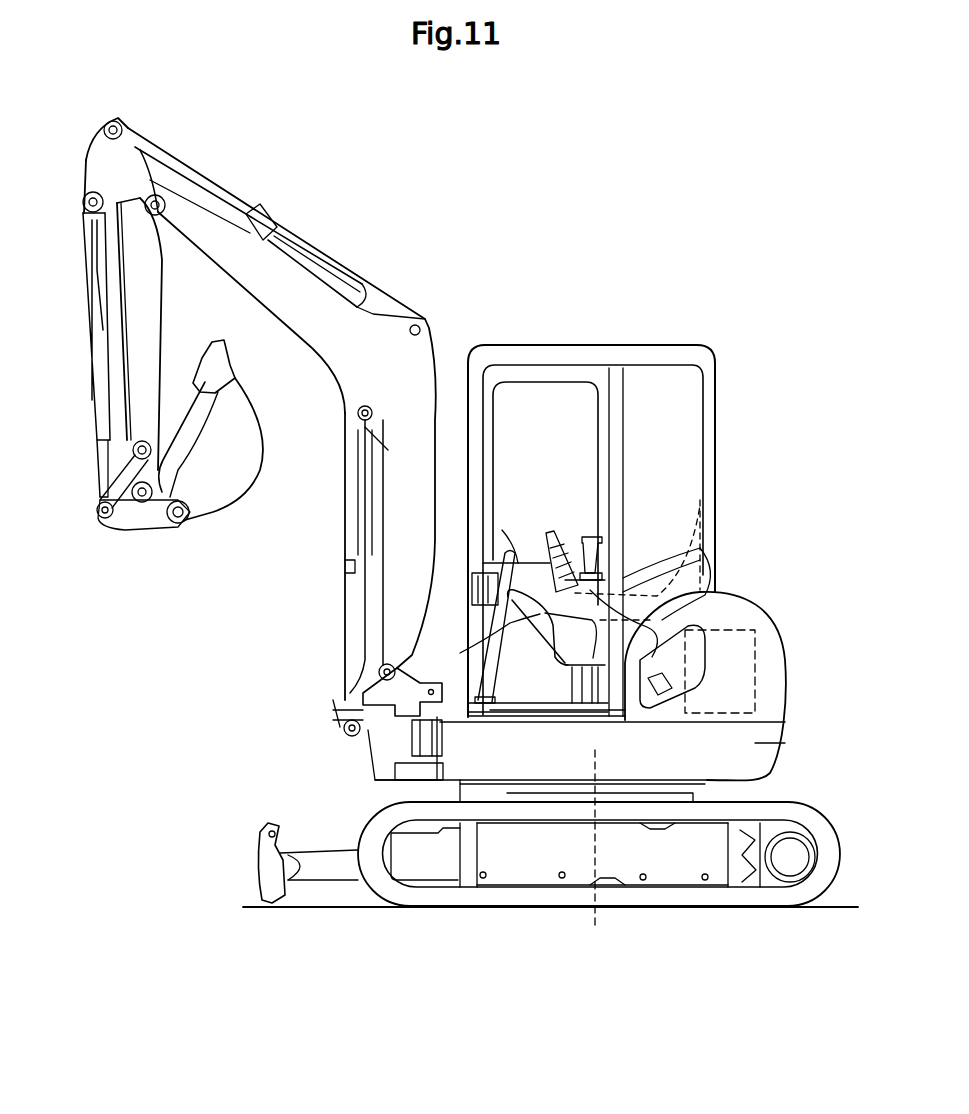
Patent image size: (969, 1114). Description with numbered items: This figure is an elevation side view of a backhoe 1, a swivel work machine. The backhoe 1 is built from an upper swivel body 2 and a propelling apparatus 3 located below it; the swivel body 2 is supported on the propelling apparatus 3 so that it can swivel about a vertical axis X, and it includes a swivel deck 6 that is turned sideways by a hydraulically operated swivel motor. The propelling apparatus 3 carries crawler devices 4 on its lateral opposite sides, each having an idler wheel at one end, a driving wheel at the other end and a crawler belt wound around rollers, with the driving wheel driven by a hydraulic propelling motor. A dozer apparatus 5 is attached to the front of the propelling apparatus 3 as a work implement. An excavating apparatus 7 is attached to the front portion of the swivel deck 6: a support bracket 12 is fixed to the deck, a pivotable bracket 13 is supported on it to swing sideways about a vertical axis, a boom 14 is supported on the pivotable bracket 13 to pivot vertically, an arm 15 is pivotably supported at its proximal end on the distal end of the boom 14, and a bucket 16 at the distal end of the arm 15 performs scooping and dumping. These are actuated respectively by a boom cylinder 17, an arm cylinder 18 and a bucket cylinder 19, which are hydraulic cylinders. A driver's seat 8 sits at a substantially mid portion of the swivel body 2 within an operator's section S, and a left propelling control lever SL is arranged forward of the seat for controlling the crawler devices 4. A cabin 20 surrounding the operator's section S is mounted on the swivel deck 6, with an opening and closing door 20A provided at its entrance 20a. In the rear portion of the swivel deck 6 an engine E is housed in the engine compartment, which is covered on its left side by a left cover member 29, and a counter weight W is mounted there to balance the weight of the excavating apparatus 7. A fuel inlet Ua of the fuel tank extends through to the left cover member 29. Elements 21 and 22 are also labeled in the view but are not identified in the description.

The backhoe 1 is at (455, 256).
The upper swivel body 2 is at (765, 577).
The propelling apparatus 3 is at (832, 810).
The crawler device 4 is at (790, 803).
The dozer apparatus 5 is at (330, 870).
The swivel deck 6 is at (476, 765).
The excavating apparatus 7 is at (303, 205).
The driver's seat 8 is at (718, 500).
The support bracket 12 is at (377, 780).
The pivotable bracket 13 is at (370, 737).
The boom 14 is at (393, 578).
The arm 15 is at (153, 300).
The bucket 16 is at (240, 490).
The boom cylinder 17 is at (347, 670).
The arm cylinder 18 is at (340, 262).
The bucket cylinder 19 is at (85, 345).
The cabin 20 is at (720, 372).
The opening and closing door 20A is at (533, 378).
The entrance 20a is at (528, 745).
The swivel bearing 21 is at (518, 795).
The operation lever 22 is at (514, 548).
The left cover member 29 is at (742, 607).
The operator's section S is at (582, 400).
The left propelling control lever SL is at (508, 592).
The fuel inlet Ua is at (650, 688).
The engine E is at (757, 665).
The counter weight W is at (768, 735).
The vertical axis X is at (592, 915).